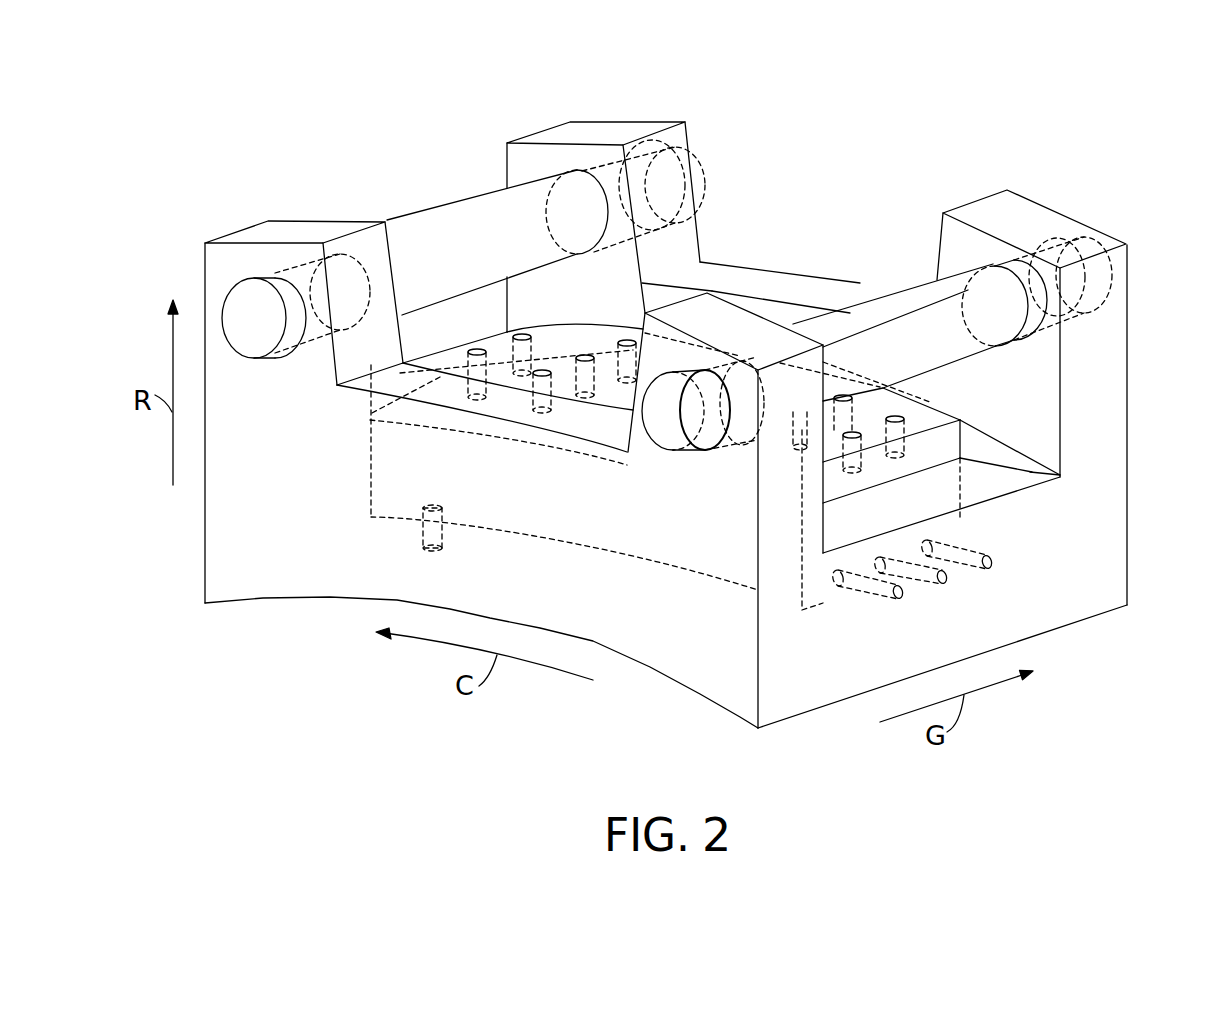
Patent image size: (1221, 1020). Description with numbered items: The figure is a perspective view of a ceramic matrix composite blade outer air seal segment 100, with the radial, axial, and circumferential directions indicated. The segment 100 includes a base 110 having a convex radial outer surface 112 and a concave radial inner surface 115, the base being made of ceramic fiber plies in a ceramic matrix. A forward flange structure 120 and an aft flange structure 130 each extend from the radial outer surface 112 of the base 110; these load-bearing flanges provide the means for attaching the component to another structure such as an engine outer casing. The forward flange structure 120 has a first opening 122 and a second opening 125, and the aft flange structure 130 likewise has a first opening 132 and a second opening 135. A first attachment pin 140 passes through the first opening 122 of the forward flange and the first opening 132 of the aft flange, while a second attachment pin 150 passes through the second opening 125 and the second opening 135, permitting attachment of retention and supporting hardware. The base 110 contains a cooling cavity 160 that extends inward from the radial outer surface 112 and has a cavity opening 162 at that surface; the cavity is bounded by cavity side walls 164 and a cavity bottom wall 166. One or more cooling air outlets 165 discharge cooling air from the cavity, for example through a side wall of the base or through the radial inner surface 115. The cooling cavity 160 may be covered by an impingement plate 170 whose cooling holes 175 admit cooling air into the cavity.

The blade outer air seal segment 100 is at (1122, 99).
The base 110 is at (1103, 569).
The radial outer surface 112 is at (1045, 473).
The radial inner surface 115 is at (1094, 620).
The forward flange structure 120 is at (205, 275).
The first opening 122 is at (285, 277).
The second opening 125 is at (716, 382).
The aft flange structure 130 is at (1128, 272).
The first opening 132 is at (582, 170).
The second opening 135 is at (1010, 274).
The first attachment pin 140 is at (416, 215).
The second attachment pin 150 is at (850, 310).
The cooling cavity 160 is at (360, 480).
The cavity opening 162 is at (960, 455).
The cavity side walls 164 is at (987, 517).
The cooling air outlets 165 is at (423, 548).
The cavity bottom wall 166 is at (744, 592).
The impingement plate 170 is at (970, 416).
The cooling holes 175 is at (476, 350).